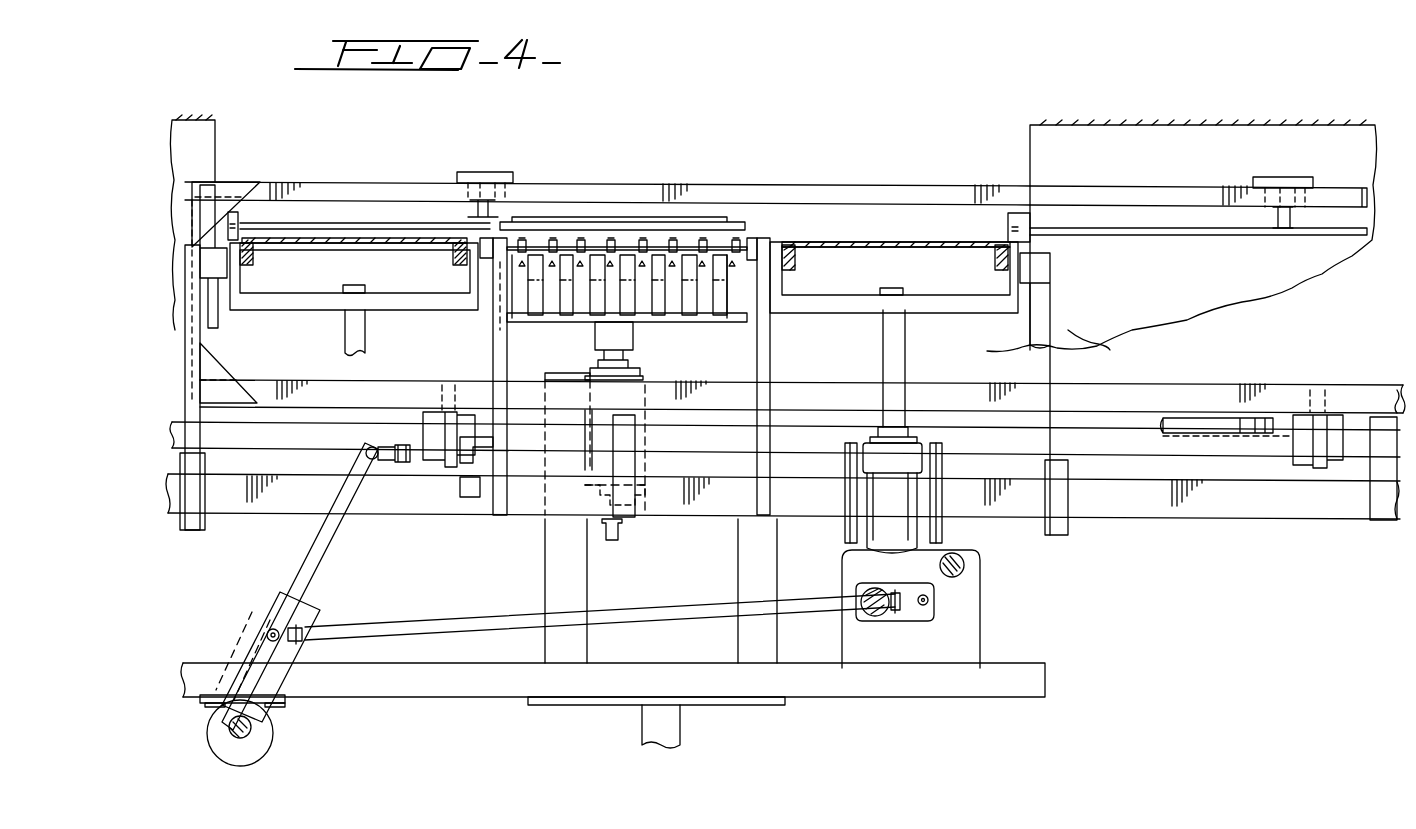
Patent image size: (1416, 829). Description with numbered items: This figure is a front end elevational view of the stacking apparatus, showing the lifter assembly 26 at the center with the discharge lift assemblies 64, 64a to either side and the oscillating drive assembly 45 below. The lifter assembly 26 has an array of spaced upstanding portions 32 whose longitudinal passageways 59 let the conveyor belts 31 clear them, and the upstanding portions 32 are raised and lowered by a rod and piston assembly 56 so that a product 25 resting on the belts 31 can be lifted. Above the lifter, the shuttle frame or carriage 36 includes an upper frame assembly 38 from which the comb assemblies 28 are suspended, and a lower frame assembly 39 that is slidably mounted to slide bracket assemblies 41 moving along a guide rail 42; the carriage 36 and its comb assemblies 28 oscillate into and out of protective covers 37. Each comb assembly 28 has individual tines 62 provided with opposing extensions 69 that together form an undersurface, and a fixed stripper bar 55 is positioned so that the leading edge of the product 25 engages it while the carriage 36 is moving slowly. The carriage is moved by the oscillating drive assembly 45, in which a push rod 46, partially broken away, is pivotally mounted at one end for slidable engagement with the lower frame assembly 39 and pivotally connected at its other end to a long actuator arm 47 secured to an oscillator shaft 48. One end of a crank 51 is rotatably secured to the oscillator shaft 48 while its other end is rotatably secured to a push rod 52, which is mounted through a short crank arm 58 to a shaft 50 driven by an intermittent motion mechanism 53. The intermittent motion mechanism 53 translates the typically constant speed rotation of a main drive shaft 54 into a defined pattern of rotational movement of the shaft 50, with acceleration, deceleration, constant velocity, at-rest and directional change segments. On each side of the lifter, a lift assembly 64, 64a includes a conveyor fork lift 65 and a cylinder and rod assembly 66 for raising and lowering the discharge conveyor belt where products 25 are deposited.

The product 25 is at (668, 218).
The lifter assembly 26 is at (587, 330).
The comb assembly 28 is at (493, 222).
The belt 31 is at (740, 244).
The upstanding portion 32 is at (718, 270).
The shuttle frame or carriage 36 is at (930, 182).
The protective cover 37 is at (208, 167).
The upper frame assembly 38 is at (1112, 198).
The lower frame assembly 39 is at (1105, 397).
The slide bracket assembly 41 is at (437, 465).
The guide rail 42 is at (1112, 445).
The oscillating drive assembly 45 is at (995, 642).
The push rod 46 is at (400, 443).
The long actuator arm 47 is at (280, 598).
The oscillator shaft 48 is at (265, 728).
The shaft 50 is at (860, 595).
The crank 51 is at (262, 648).
The push rod 52 is at (488, 623).
The intermittent motion mechanism 53 is at (943, 652).
The main drive shaft 54 is at (964, 565).
The fixed stripper bar 55 is at (235, 214).
The rod and piston assembly 56 is at (625, 468).
The short crank arm 58 is at (885, 612).
The longitudinal passageway 59 is at (672, 278).
The tine 62 is at (743, 230).
The lift assembly 64 is at (366, 318).
The lift assembly 64a is at (905, 358).
The conveyor fork lift 65 is at (440, 302).
The cylinder and rod assembly 66 is at (906, 514).
The opposing extension 69 is at (305, 224).